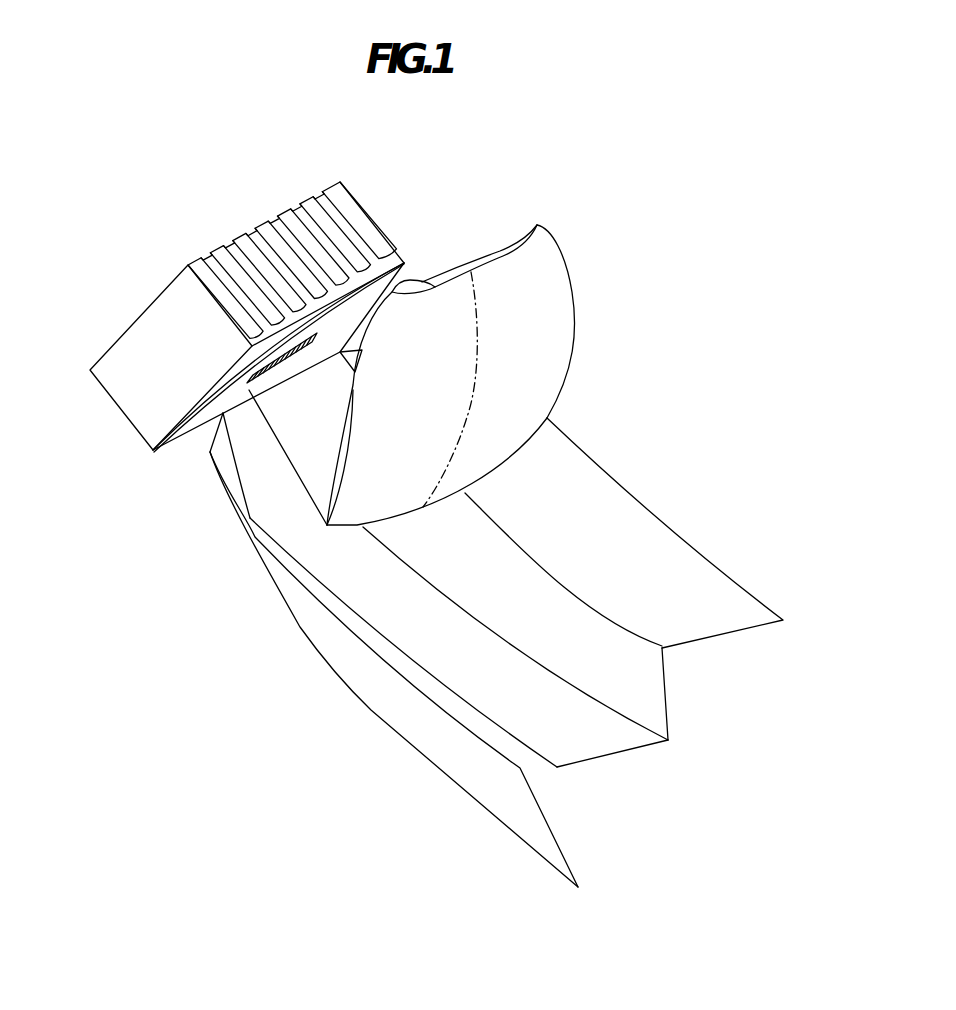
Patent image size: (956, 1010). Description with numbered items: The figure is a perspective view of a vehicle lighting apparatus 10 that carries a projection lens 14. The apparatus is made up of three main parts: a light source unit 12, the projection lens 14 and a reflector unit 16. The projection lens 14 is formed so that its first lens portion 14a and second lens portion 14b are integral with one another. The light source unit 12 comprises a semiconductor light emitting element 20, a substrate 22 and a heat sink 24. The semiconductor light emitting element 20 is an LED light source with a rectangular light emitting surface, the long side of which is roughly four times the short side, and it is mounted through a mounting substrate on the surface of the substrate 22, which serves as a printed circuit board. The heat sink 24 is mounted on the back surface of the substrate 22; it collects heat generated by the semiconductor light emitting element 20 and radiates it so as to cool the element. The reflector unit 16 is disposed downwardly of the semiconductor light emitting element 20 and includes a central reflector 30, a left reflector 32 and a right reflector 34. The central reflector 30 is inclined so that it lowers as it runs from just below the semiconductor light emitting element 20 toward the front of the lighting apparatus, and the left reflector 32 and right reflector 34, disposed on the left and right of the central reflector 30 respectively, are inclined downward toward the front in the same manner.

The vehicle lighting apparatus 10 is at (704, 253).
The light source unit 12 is at (403, 210).
The projection lens 14 is at (577, 321).
The first lens portion 14a is at (353, 497).
The second lens portion 14b is at (537, 387).
The reflector unit 16 is at (702, 527).
The semiconductor light emitting element 20 is at (287, 366).
The substrate 22 is at (153, 453).
The heat sink 24 is at (112, 407).
The central reflector 30 is at (640, 748).
The left reflector 32 is at (745, 633).
The right reflector 34 is at (561, 845).